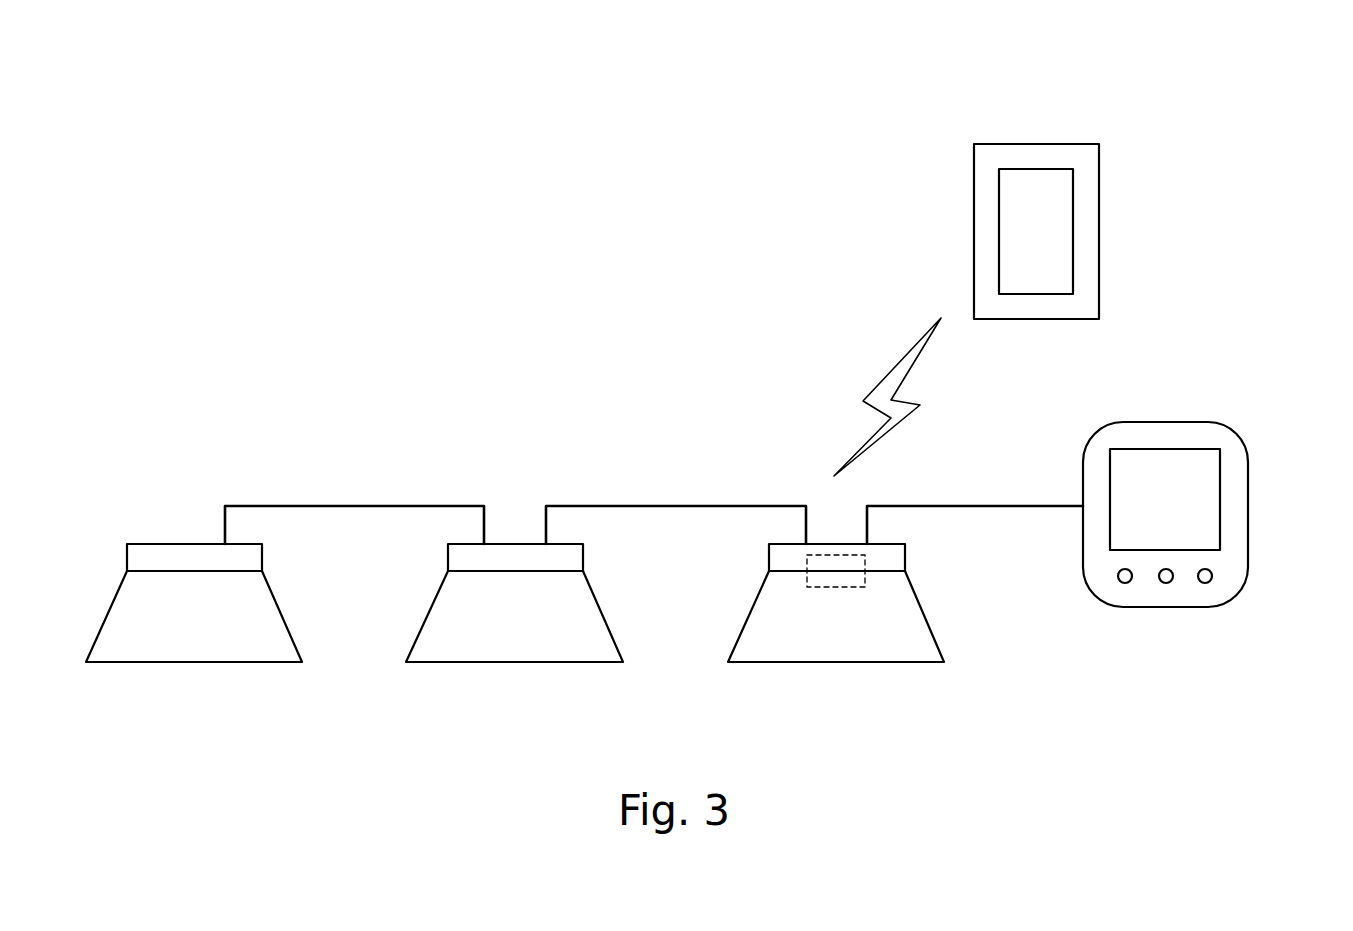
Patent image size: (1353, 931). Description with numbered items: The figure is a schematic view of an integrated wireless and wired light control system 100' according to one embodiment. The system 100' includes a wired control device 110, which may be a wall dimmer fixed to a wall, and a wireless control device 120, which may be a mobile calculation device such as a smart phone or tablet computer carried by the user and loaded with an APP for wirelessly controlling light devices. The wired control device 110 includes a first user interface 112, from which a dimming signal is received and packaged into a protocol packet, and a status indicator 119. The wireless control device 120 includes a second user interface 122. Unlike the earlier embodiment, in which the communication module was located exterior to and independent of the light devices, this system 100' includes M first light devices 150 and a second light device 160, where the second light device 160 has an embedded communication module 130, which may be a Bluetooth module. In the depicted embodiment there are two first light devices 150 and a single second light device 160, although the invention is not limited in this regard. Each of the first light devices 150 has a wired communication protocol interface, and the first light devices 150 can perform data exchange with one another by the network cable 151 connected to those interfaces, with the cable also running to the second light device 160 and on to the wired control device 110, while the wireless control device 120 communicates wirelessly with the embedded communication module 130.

The light control system 100' is at (203, 242).
The wired control device 110 is at (1215, 510).
The first user interface 112 is at (1202, 493).
The status indicator 119 is at (1205, 583).
The wireless control device 120 is at (966, 255).
The second user interface 122 is at (1018, 228).
The communication module 130 is at (865, 578).
The first light devices 150 is at (198, 640).
The network cable 151 is at (355, 510).
The second light device 160 is at (860, 642).